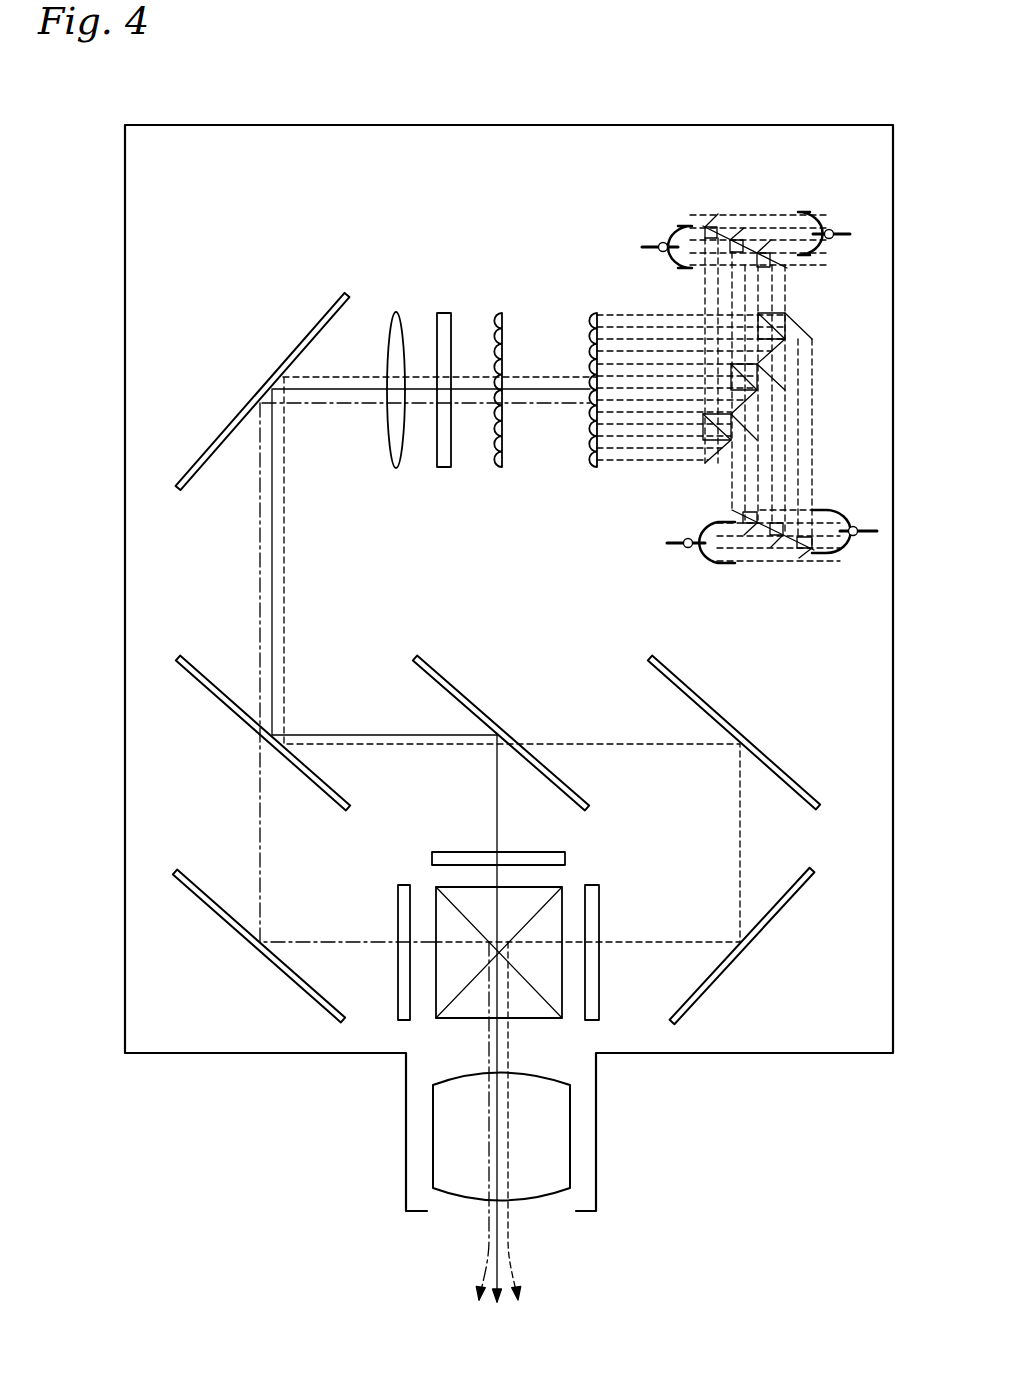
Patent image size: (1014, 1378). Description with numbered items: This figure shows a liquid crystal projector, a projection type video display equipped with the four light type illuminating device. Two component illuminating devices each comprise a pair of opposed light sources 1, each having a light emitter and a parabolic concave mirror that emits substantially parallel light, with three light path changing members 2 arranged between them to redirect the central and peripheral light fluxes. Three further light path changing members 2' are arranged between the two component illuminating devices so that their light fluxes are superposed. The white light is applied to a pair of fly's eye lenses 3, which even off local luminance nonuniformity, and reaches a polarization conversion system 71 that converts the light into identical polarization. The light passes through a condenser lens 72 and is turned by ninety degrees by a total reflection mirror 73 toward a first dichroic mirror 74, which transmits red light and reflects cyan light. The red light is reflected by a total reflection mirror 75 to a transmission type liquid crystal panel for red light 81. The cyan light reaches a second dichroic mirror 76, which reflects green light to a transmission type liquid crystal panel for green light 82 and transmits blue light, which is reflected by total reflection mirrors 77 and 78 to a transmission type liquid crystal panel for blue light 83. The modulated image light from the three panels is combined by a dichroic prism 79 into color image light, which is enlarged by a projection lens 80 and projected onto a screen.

The light source 1 is at (652, 214).
The light path changing member 2 is at (752, 393).
The light path changing member 2' is at (790, 388).
The fly's eye lens 3 is at (600, 309).
The polarization conversion system 71 is at (441, 312).
The condenser lens 72 is at (390, 441).
The total reflection mirror 73 is at (318, 320).
The first dichroic mirror 74 is at (238, 719).
The total reflection mirror 75 is at (236, 933).
The second dichroic mirror 76 is at (442, 686).
The total reflection mirror 77 is at (788, 772).
The total reflection mirror 78 is at (787, 906).
The dichroic prism 79 is at (528, 1008).
The projection lens 80 is at (558, 1155).
The transmission type liquid crystal panel for red light 81 is at (397, 913).
The transmission type liquid crystal panel for green light 82 is at (565, 857).
The transmission type liquid crystal panel for blue light 83 is at (600, 910).